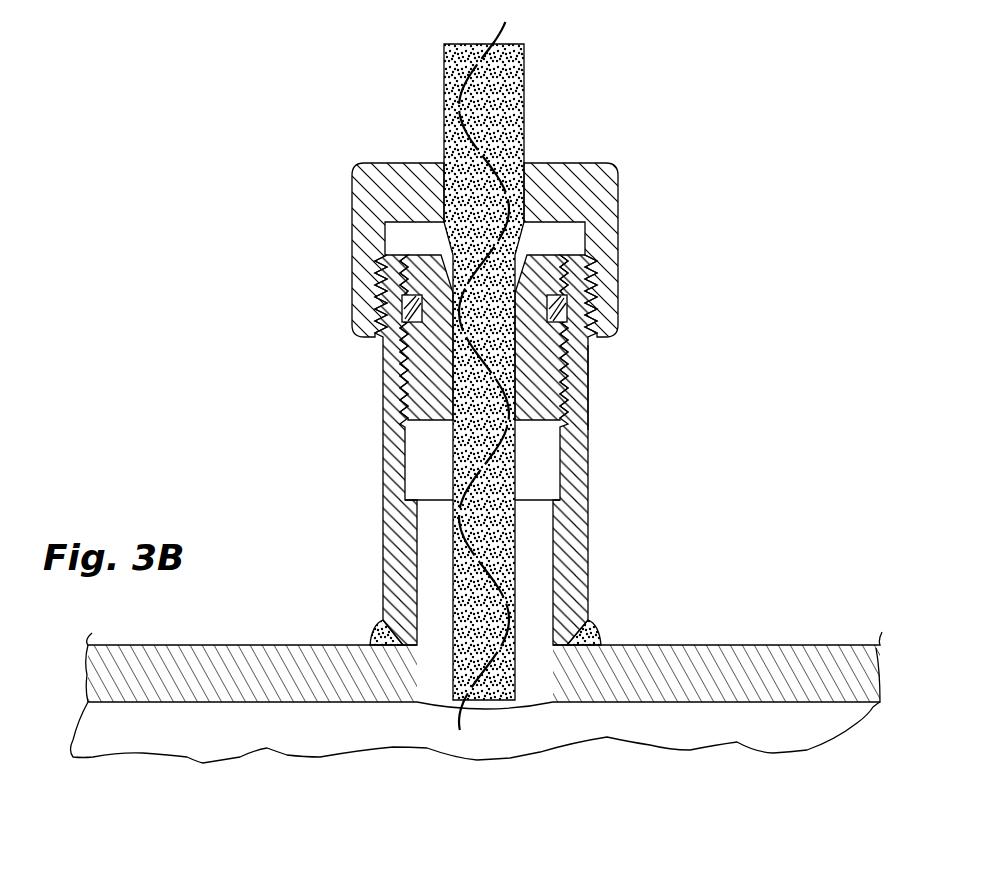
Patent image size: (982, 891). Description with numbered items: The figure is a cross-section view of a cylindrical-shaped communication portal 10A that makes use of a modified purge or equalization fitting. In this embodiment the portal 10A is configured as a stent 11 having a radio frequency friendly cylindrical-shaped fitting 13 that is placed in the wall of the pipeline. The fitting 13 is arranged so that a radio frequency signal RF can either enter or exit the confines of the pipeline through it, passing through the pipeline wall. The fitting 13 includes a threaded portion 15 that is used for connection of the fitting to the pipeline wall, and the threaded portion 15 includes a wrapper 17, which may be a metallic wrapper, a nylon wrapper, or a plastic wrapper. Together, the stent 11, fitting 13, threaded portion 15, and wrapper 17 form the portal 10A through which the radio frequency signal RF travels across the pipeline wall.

The stent 11 is at (648, 238).
The cylindrical-shaped fitting 13 is at (382, 480).
The threaded portion 15 is at (405, 383).
The wrapper 17 is at (587, 387).
The portal 10A is at (443, 117).
The radio frequency signal RF is at (463, 87).